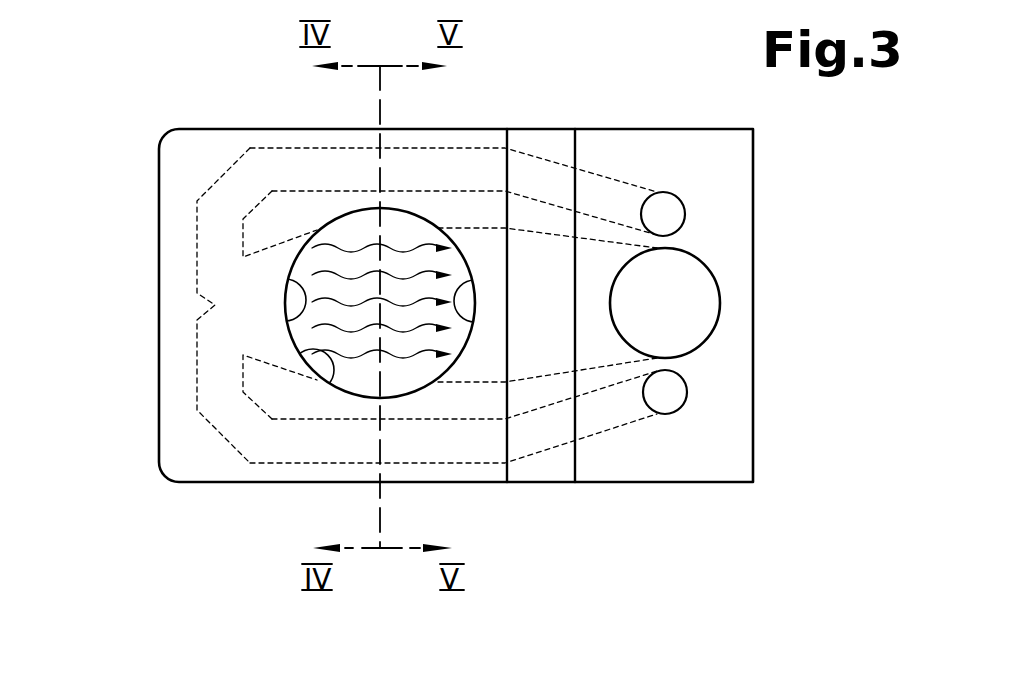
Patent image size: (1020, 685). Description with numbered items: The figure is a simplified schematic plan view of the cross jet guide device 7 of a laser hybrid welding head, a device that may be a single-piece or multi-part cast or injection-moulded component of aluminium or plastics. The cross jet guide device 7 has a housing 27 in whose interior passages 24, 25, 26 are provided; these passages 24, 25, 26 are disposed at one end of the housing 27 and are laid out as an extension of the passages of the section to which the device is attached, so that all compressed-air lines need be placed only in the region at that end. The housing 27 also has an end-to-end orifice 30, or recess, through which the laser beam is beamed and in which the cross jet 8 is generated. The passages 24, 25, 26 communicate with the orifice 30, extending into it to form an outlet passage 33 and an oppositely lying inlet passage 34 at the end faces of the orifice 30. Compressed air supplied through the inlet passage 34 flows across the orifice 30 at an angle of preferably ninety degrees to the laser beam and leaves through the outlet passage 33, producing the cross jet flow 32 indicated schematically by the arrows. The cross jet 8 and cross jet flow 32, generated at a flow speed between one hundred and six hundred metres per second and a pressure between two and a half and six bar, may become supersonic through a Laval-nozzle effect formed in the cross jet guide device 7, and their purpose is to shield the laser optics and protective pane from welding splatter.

The cross jet guide device 7 is at (132, 115).
The cross jet 8 is at (417, 233).
The passage 24 is at (590, 183).
The passage 25 is at (670, 393).
The passage 26 is at (695, 303).
The housing 27 is at (192, 457).
The orifice 30 is at (303, 352).
The cross jet flow 32 is at (337, 270).
The outlet passage 33 is at (280, 313).
The inlet passage 34 is at (477, 322).